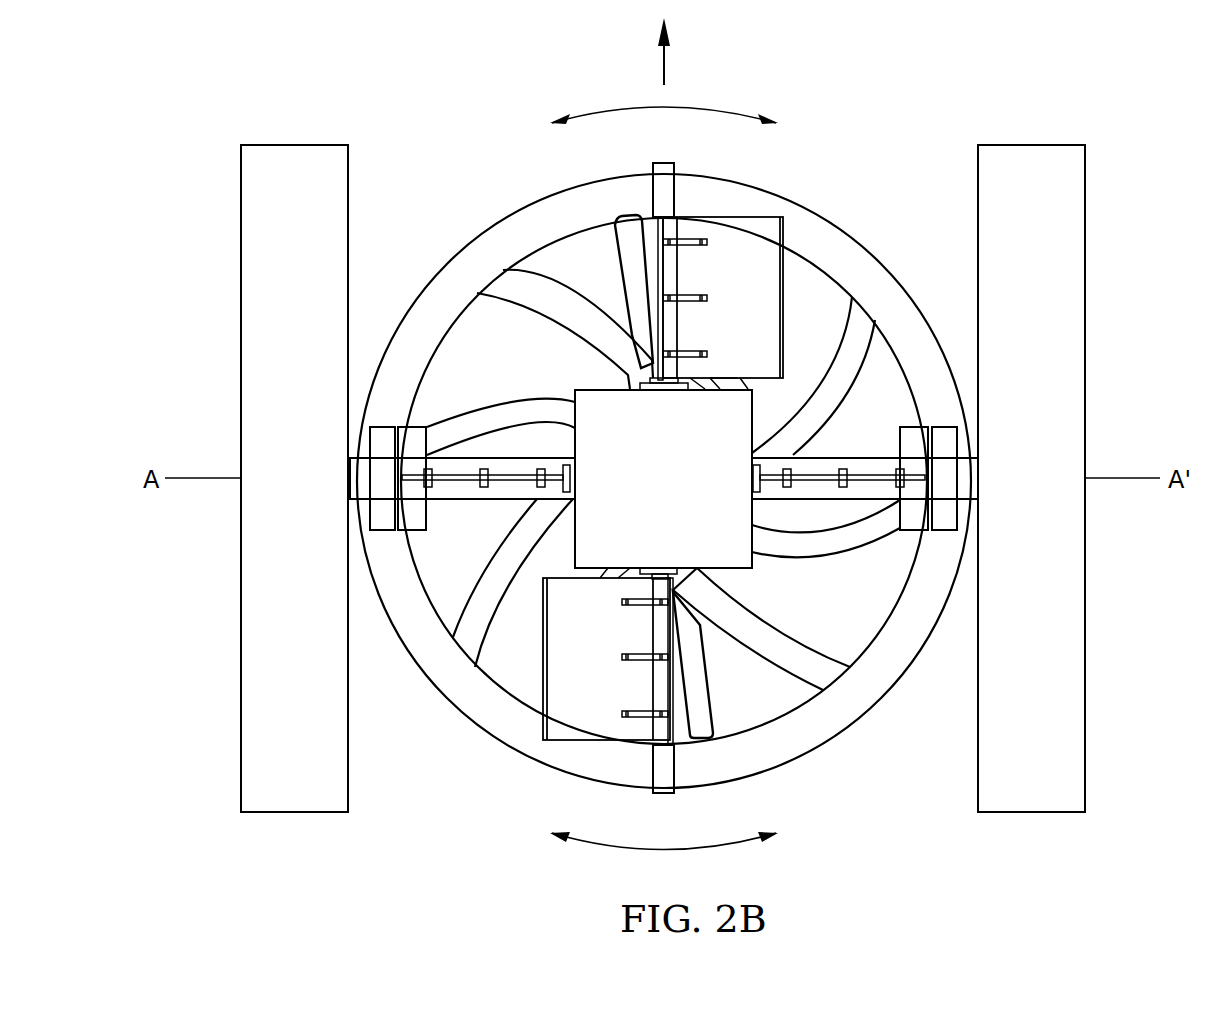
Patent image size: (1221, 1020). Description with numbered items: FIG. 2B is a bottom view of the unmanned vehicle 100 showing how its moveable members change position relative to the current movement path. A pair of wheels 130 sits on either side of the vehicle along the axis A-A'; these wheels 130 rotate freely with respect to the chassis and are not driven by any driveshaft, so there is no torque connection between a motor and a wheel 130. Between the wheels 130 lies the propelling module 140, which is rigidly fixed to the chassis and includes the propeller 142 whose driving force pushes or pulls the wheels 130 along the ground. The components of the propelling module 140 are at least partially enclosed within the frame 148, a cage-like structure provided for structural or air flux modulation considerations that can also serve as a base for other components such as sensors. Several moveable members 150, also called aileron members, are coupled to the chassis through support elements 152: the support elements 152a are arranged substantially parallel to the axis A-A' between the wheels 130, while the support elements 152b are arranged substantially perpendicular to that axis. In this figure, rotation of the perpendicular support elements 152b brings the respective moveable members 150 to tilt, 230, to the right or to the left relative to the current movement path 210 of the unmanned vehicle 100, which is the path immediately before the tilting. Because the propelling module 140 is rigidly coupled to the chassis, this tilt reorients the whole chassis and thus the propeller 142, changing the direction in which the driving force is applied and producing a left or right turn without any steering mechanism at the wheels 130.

The unmanned vehicle 100 is at (897, 70).
The wheels 130 is at (253, 248).
The propelling module 140 is at (792, 393).
The propeller 142 is at (630, 265).
The frame 148 is at (427, 278).
The moveable members 150 is at (772, 232).
The support elements 152 is at (657, 235).
The support elements parallel to axis A-A' 152a is at (862, 482).
The support elements perpendicular to axis A-A' 152b is at (673, 678).
The current movement path 210 is at (667, 68).
The tilt to the right or to the left 230 is at (638, 107).